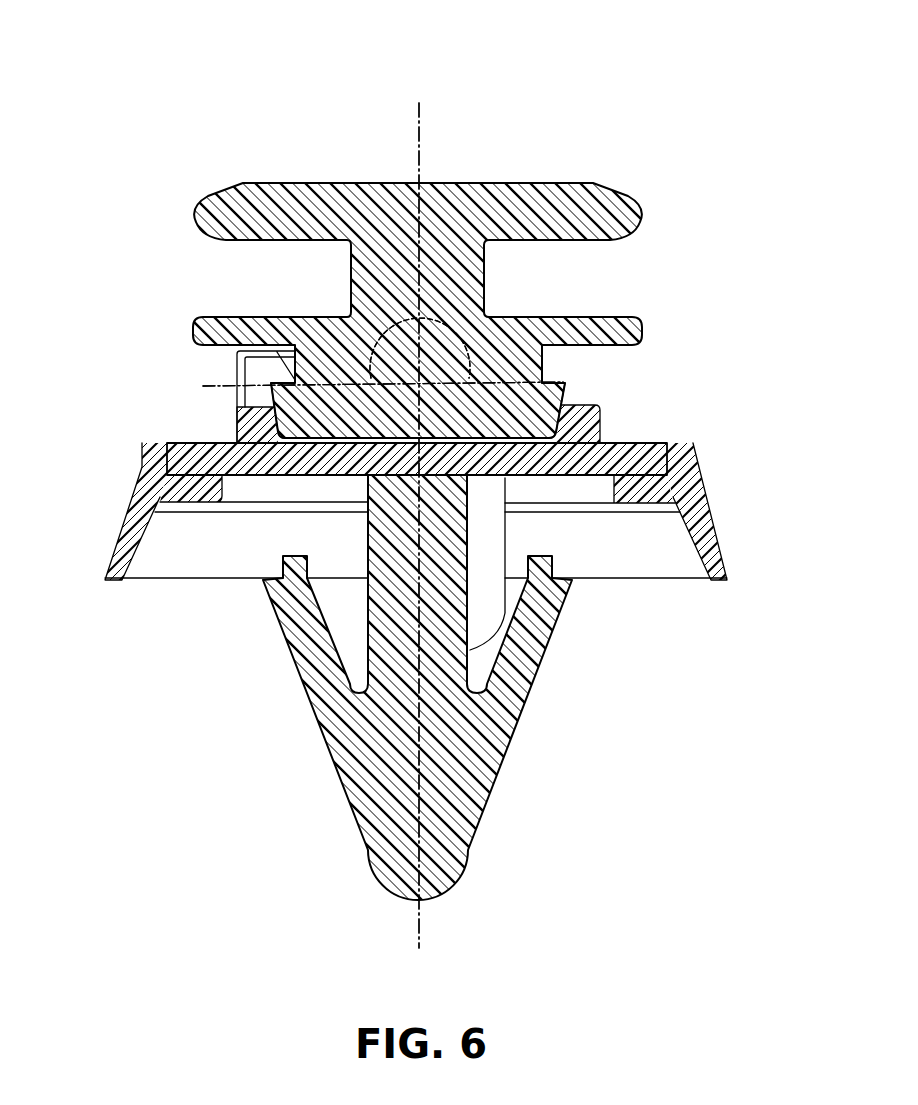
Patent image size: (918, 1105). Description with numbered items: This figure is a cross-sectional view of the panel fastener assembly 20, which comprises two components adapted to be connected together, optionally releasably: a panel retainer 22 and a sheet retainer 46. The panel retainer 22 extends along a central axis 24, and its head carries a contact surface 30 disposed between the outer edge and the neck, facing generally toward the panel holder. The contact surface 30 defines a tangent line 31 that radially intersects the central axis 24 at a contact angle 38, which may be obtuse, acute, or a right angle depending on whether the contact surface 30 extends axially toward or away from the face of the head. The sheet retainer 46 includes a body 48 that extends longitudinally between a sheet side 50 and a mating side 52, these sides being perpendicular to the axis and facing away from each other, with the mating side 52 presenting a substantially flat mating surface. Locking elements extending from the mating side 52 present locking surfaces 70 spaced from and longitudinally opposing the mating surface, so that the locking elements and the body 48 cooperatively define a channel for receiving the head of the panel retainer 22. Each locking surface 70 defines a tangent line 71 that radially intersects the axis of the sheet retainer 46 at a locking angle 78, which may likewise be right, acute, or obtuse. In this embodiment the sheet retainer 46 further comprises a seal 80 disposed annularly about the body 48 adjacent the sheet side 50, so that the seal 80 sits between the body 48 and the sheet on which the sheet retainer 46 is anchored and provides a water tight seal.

The panel fastener assembly 20 is at (178, 82).
The panel retainer 22 is at (467, 183).
The central axis 24 is at (425, 115).
The contact surface 30 is at (563, 385).
The tangent line 31 is at (593, 385).
The contact angle 38 is at (427, 332).
The locking angle 78 is at (380, 333).
The locking surface 70 is at (273, 397).
The tangent line 71 is at (205, 385).
The body 48 is at (444, 514).
The mating side 52 is at (628, 442).
The sheet side 50 is at (583, 478).
The seal 80 is at (643, 568).
The sheet retainer 46 is at (342, 790).